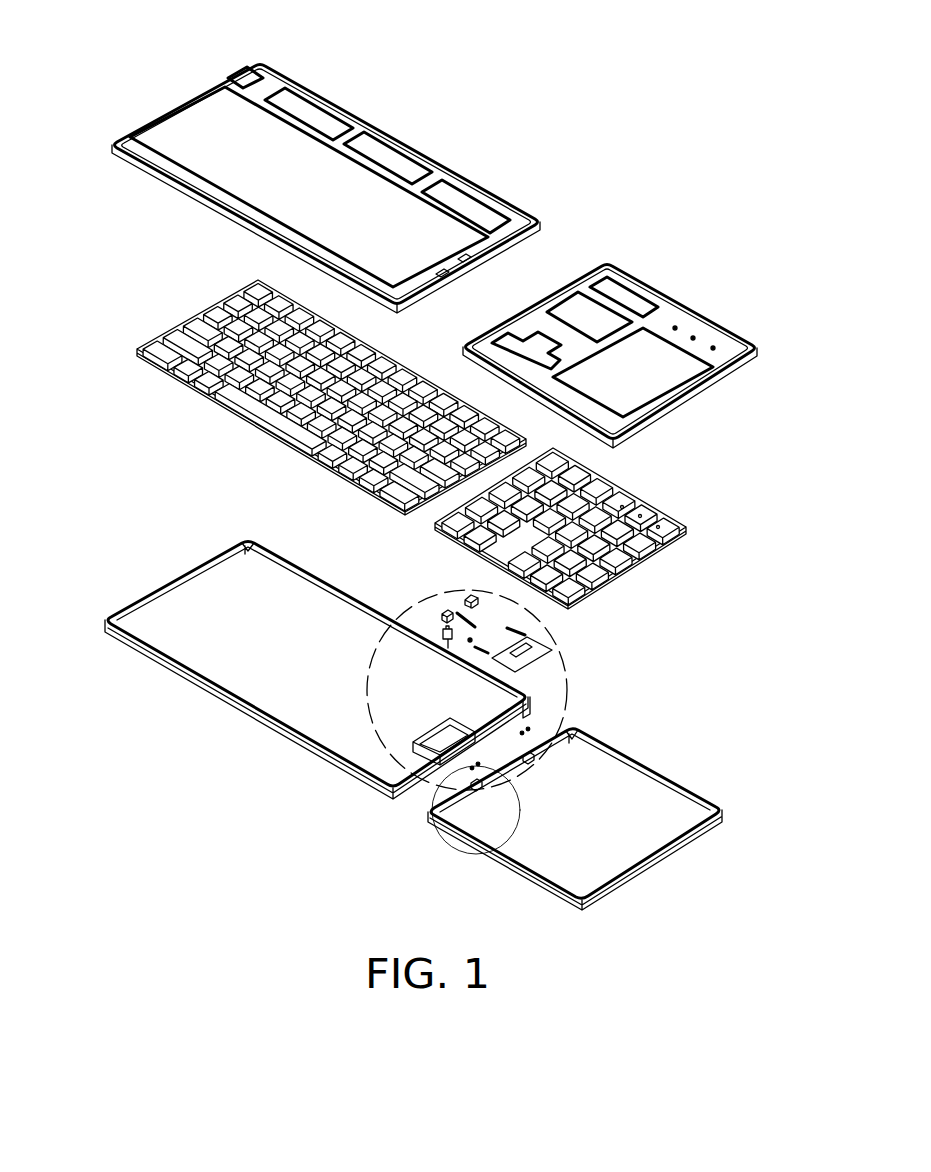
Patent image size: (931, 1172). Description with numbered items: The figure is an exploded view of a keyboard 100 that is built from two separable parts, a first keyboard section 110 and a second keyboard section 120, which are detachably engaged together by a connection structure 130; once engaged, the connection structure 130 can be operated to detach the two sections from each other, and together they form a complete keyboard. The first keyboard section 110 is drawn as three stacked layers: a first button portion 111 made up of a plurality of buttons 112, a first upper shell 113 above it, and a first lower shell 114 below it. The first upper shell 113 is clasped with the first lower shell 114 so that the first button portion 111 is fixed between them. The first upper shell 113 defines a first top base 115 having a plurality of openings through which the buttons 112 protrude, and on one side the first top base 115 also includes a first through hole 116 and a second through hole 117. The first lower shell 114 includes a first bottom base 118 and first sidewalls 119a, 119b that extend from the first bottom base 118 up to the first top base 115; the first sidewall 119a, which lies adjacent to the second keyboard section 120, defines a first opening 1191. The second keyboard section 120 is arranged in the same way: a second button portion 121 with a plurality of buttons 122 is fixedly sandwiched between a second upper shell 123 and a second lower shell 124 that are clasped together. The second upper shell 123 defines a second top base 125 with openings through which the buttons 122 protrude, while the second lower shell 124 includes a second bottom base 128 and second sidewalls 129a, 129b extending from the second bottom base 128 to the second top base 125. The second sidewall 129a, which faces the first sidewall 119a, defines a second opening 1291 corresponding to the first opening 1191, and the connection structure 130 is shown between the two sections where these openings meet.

The keyboard 100 is at (548, 105).
The first keyboard section 110 is at (144, 526).
The first button portion 111 is at (319, 389).
The buttons 112 is at (230, 297).
The first upper shell 113 is at (302, 172).
The first lower shell 114 is at (363, 664).
The first top base 115 is at (260, 65).
The first through hole 116 is at (453, 274).
The second through hole 117 is at (473, 258).
The first bottom base 118 is at (253, 688).
The first sidewall 119a is at (405, 787).
The first sidewall 119b is at (178, 578).
The first opening 1191 is at (530, 706).
The second keyboard section 120 is at (750, 443).
The second button portion 121 is at (590, 528).
The buttons 122 is at (596, 474).
The second upper shell 123 is at (675, 420).
The second lower shell 124 is at (582, 789).
The second top base 125 is at (672, 308).
The second bottom base 128 is at (650, 800).
The second sidewall 129a is at (456, 798).
The second sidewall 129b is at (692, 837).
The second opening 1291 is at (490, 838).
The connection structure 130 is at (428, 606).